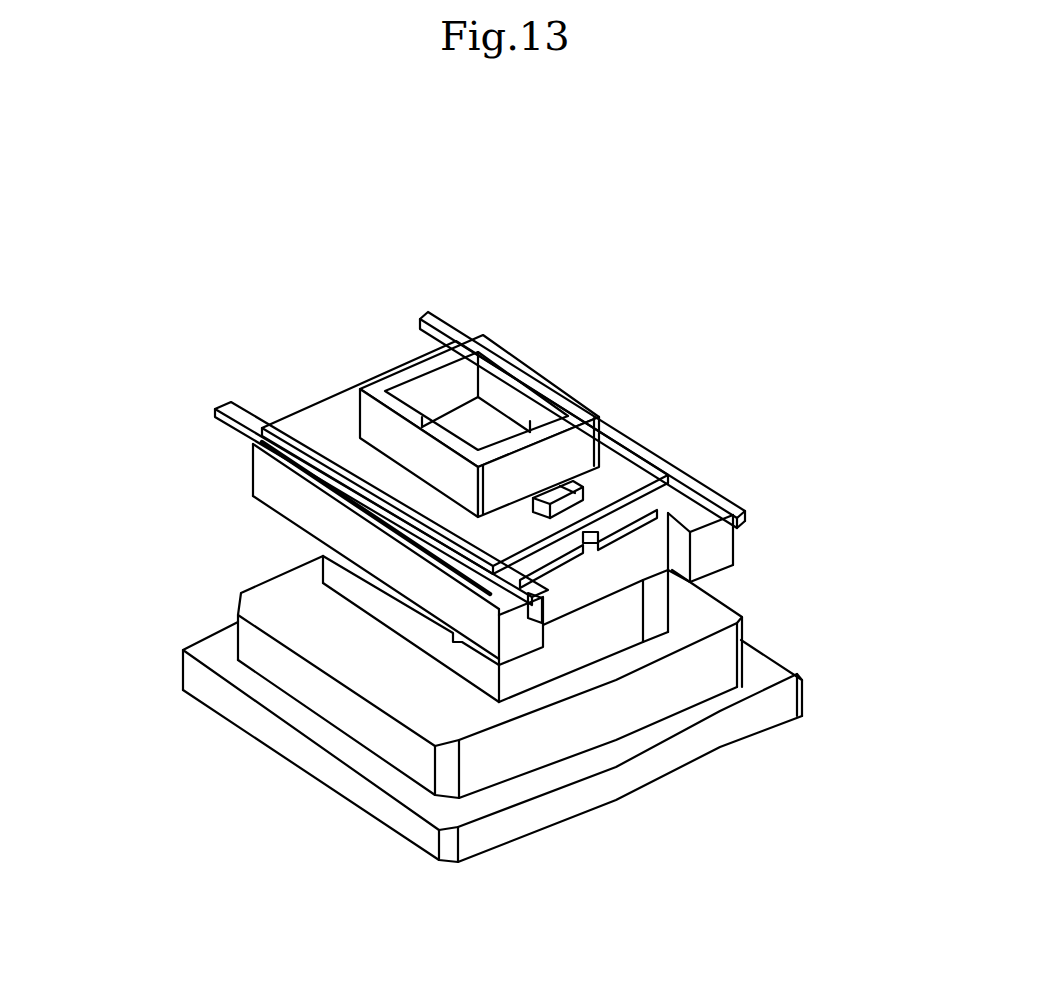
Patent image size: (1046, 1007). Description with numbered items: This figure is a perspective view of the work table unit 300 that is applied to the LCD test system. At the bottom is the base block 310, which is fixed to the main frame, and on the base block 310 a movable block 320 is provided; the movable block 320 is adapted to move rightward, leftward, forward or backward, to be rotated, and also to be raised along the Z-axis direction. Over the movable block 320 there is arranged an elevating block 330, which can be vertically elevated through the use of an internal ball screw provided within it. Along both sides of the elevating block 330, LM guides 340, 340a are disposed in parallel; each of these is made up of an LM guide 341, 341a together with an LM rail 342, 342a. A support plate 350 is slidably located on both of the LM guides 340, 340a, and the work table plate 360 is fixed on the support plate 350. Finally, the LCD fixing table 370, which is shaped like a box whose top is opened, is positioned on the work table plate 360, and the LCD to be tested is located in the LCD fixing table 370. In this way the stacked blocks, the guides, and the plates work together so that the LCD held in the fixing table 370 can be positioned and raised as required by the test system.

The work table unit 300 is at (492, 554).
The base block 310 is at (523, 818).
The movable block 320 is at (370, 741).
The elevating block 330 is at (578, 654).
The LM guide 340 is at (681, 447).
The LM guide 341 is at (733, 510).
The LM rail 342 is at (725, 555).
The LM guide 340a is at (295, 489).
The LM guide 341a is at (222, 418).
The LM rail 342a is at (260, 487).
The support plate 350 is at (295, 438).
The work table plate 360 is at (640, 476).
The LCD fixing table 370 is at (587, 446).